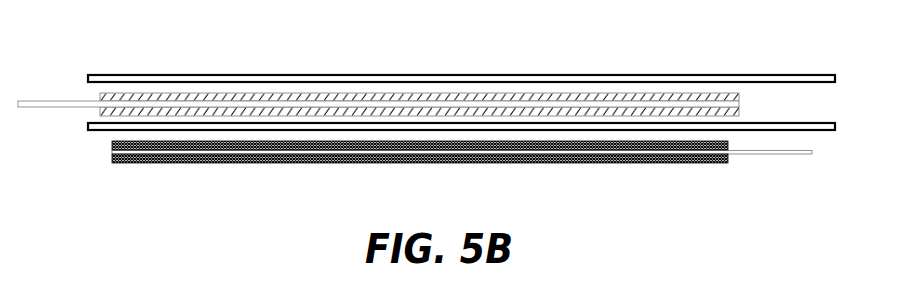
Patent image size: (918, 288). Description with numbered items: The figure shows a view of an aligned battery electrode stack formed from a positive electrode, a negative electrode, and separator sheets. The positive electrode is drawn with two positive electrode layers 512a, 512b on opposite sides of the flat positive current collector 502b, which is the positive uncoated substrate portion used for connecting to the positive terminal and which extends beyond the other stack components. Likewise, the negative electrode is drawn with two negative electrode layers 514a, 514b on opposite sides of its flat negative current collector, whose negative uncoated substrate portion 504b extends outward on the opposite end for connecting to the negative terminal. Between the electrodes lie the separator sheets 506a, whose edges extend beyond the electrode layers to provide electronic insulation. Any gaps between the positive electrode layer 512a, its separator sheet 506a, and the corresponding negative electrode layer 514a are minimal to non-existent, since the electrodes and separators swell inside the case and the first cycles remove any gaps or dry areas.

The positive uncoated substrate portion 502b is at (770, 155).
The negative uncoated substrate portion 504b is at (52, 101).
The separator sheet 506a is at (740, 80).
The positive electrode layer 512a is at (675, 144).
The positive electrode layer 512b is at (582, 163).
The negative electrode layer 514a is at (153, 108).
The negative electrode layer 514b is at (252, 92).